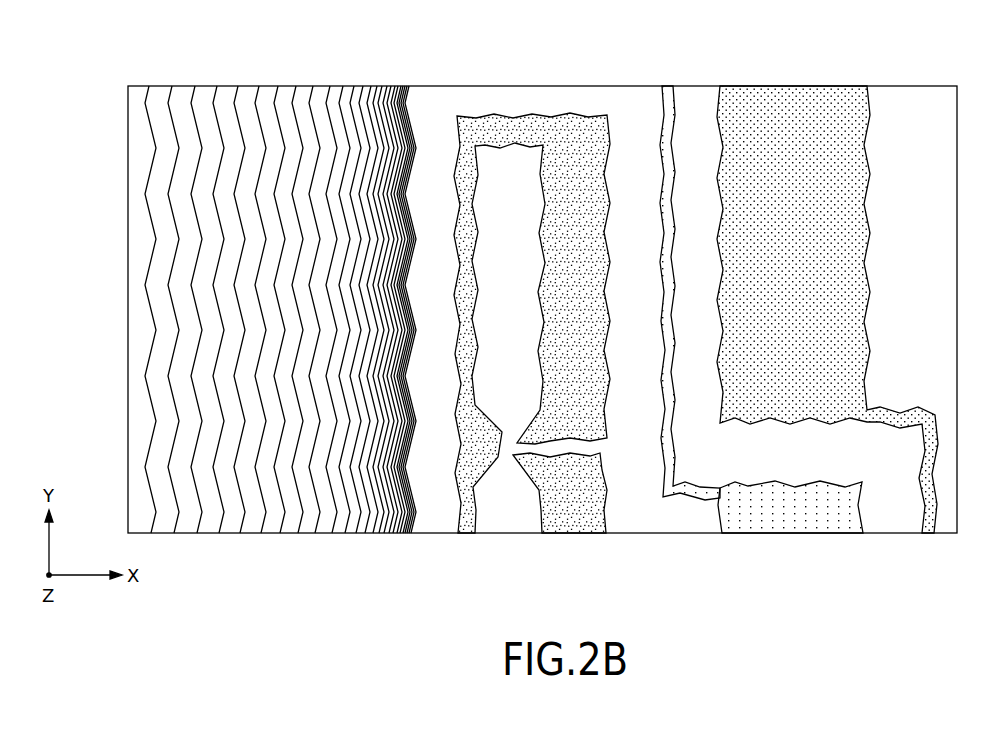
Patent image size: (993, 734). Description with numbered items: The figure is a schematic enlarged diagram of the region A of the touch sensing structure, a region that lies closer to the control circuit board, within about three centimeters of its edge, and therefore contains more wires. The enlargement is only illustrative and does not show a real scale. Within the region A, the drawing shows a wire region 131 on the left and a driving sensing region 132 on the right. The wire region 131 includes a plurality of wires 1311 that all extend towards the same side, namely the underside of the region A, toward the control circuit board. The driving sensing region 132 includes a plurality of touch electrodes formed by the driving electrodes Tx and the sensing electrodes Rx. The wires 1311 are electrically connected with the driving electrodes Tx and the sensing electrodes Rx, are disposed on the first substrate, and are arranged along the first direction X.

The region A is at (128, 200).
The wire region 131 is at (295, 269).
The wires 1311 is at (388, 86).
The driving electrodes Tx is at (572, 110).
The sensing electrodes Rx is at (745, 105).
The driving sensing region 132 is at (799, 279).